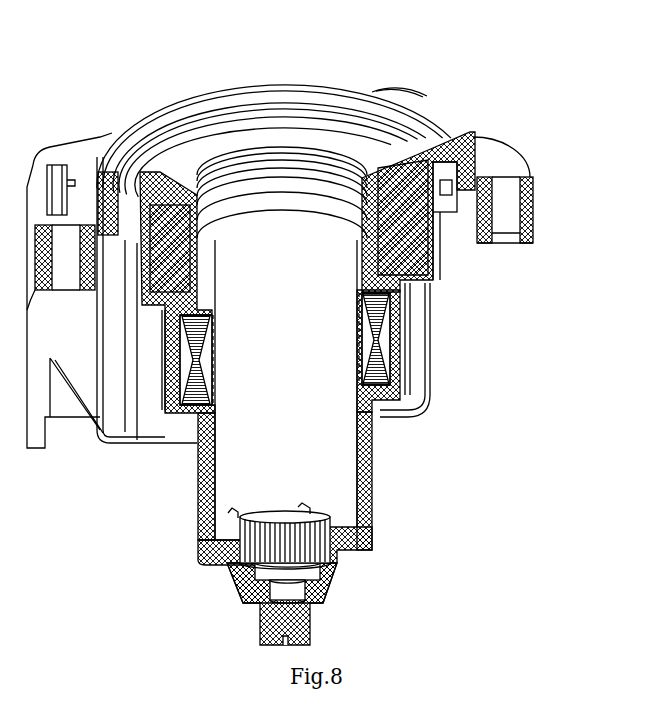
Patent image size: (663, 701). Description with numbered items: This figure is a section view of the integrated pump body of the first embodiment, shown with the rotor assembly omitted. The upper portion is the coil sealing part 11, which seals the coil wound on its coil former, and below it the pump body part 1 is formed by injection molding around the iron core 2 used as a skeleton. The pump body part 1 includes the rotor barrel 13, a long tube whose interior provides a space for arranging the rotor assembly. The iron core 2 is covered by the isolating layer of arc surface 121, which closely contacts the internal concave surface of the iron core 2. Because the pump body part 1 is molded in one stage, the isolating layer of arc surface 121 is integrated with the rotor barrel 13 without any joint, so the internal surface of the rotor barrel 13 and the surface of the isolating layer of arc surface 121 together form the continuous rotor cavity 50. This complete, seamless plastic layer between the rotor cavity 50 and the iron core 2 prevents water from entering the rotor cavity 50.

The pump body part 1 is at (308, 80).
The coil sealing part 11 is at (410, 215).
The iron core 2 is at (380, 325).
The isolating layer of arc surface 121 is at (360, 352).
The rotor barrel 13 is at (367, 452).
The rotor cavity 50 is at (322, 472).